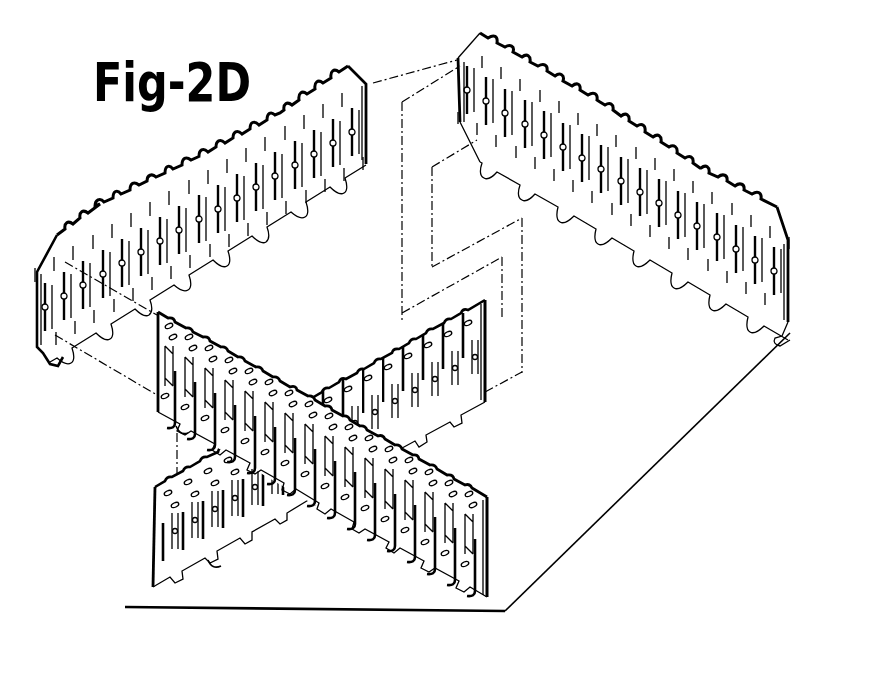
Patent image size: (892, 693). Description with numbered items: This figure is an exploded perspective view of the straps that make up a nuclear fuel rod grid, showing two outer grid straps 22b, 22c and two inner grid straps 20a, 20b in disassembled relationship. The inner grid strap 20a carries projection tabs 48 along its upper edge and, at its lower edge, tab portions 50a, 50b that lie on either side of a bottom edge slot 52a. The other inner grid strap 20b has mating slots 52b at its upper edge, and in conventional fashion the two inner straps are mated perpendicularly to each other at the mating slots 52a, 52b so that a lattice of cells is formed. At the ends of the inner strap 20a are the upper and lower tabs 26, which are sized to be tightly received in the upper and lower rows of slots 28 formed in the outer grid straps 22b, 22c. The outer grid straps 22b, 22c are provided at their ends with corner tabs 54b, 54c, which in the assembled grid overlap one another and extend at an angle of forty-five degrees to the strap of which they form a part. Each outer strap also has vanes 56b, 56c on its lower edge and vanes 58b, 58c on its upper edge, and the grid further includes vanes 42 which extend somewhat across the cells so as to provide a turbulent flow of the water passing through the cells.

The inner grid strap 20a is at (346, 454).
The inner grid strap 20b is at (324, 443).
The outer grid strap 22b is at (226, 202).
The outer grid strap 22c is at (622, 176).
The tabs 26 is at (496, 309).
The slots 28 is at (480, 62).
The vanes 42 is at (180, 432).
The projection tabs 48 is at (200, 325).
The tab portion 50a is at (368, 369).
The tab portion 50b is at (372, 360).
The bottom edge slot 52a is at (418, 568).
The mating slots 52b is at (172, 479).
The corner tab 54b is at (370, 93).
The corner tab 54c is at (460, 60).
The vanes 56b is at (293, 240).
The vanes 56c is at (673, 283).
The vanes 58b is at (303, 92).
The vanes 58c is at (695, 160).